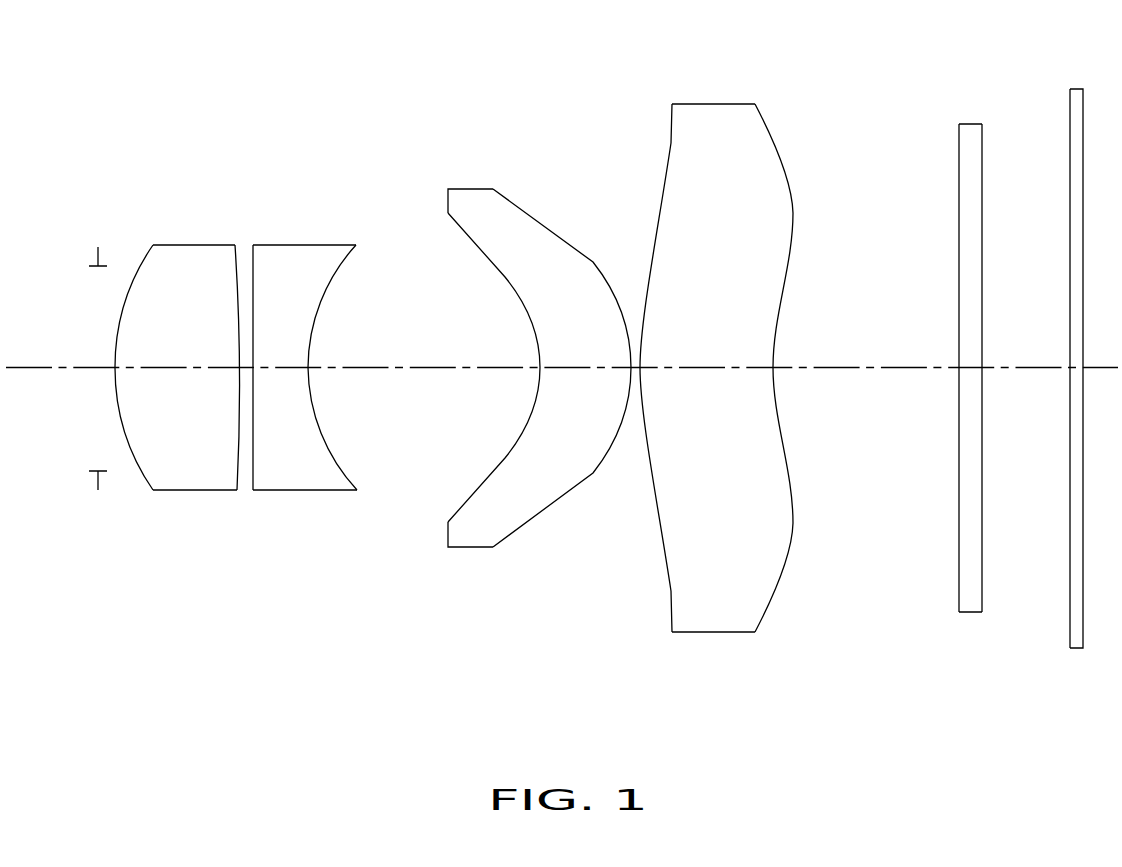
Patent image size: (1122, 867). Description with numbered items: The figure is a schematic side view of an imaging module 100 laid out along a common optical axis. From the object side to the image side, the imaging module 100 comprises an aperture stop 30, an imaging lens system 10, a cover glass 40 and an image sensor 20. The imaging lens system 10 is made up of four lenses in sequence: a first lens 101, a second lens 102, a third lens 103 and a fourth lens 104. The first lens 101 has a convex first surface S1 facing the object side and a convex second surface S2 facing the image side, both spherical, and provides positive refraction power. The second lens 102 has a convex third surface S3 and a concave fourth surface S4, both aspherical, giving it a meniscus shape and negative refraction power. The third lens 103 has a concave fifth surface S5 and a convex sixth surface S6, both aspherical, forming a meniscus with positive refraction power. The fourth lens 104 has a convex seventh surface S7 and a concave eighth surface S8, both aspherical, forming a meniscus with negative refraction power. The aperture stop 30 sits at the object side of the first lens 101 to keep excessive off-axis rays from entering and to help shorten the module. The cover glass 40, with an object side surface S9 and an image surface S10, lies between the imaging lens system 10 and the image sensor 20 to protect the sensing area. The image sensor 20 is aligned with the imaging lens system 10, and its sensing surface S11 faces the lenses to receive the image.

The lens system 100 is at (283, 92).
The lens group 10 is at (634, 623).
The first lens 101 is at (208, 475).
The second lens 102 is at (307, 475).
The third lens 103 is at (477, 528).
The fourth lens 104 is at (673, 538).
The aperture stop 30 is at (96, 482).
The infrared cut filter 40 is at (972, 167).
The image sensor 20 is at (1075, 593).
The object-side surface of first lens S1 is at (139, 267).
The image-side surface of first lens S2 is at (239, 292).
The object-side surface of second lens S3 is at (249, 323).
The image-side surface of second lens S4 is at (320, 306).
The object-side surface of third lens S5 is at (506, 281).
The image-side surface of third lens S6 is at (542, 222).
The object-side surface of fourth lens S7 is at (661, 199).
The image-side surface of fourth lens S8 is at (796, 211).
The object-side surface of filter S9 is at (958, 538).
The image-side surface of filter S10 is at (984, 530).
The imaging surface of image sensor S11 is at (1069, 103).